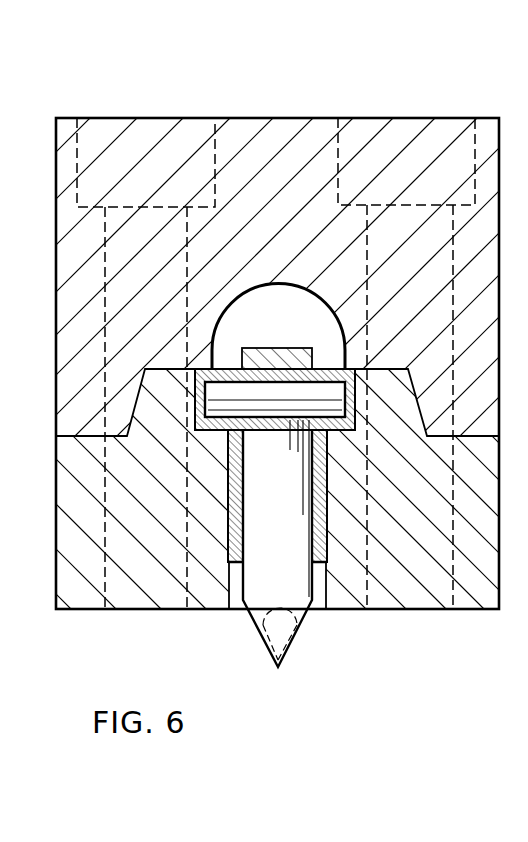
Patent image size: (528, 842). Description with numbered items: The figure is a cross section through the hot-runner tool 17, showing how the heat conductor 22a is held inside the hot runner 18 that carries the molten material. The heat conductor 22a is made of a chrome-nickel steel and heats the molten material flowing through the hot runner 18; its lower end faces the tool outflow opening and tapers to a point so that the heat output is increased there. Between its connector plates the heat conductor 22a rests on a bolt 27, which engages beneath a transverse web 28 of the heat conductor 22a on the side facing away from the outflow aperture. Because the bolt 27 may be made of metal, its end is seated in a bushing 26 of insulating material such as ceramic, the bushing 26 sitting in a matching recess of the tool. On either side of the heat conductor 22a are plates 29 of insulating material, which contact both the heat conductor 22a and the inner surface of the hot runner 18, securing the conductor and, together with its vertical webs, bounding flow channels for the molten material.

The hot-runner tool 17 is at (317, 117).
The hot runner 18 is at (289, 314).
The heat conductor 22a is at (304, 634).
The bushing 26 is at (333, 369).
The bolt 27 is at (270, 405).
The transverse web 28 is at (254, 348).
The plate 29 is at (235, 550).